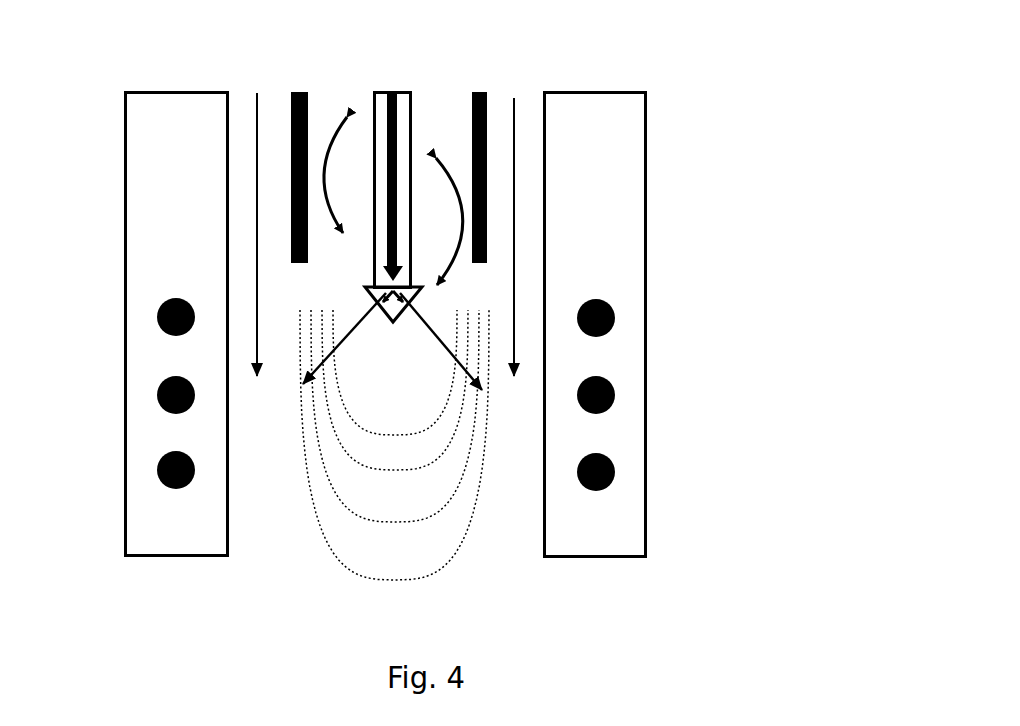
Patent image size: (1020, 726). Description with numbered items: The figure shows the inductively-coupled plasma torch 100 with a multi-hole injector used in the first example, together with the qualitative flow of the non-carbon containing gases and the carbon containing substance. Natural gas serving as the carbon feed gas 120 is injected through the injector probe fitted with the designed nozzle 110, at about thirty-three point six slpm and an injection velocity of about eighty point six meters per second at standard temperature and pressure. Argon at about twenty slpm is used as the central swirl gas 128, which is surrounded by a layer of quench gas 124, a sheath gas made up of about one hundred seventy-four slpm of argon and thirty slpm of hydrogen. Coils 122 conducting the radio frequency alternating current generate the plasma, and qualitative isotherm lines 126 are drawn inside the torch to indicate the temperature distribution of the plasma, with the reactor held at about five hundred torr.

The ICP torch 100 is at (270, 74).
The nozzle 110 is at (403, 284).
The carbon feed gas 120 is at (390, 237).
The coils 122 is at (157, 321).
The quench gas 124 is at (262, 392).
The qualitative isotherm lines 126 is at (447, 483).
The central swirl gas 128 is at (450, 177).